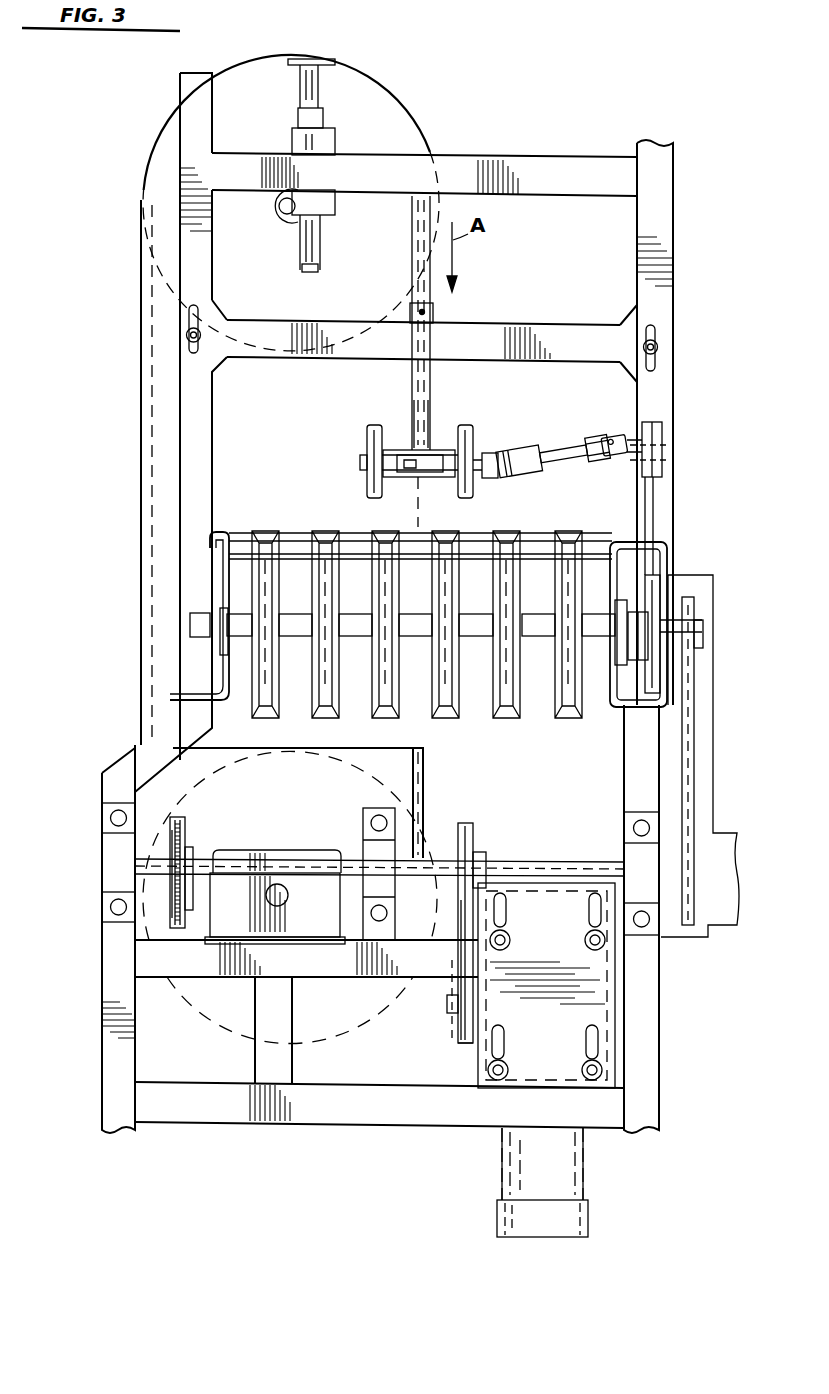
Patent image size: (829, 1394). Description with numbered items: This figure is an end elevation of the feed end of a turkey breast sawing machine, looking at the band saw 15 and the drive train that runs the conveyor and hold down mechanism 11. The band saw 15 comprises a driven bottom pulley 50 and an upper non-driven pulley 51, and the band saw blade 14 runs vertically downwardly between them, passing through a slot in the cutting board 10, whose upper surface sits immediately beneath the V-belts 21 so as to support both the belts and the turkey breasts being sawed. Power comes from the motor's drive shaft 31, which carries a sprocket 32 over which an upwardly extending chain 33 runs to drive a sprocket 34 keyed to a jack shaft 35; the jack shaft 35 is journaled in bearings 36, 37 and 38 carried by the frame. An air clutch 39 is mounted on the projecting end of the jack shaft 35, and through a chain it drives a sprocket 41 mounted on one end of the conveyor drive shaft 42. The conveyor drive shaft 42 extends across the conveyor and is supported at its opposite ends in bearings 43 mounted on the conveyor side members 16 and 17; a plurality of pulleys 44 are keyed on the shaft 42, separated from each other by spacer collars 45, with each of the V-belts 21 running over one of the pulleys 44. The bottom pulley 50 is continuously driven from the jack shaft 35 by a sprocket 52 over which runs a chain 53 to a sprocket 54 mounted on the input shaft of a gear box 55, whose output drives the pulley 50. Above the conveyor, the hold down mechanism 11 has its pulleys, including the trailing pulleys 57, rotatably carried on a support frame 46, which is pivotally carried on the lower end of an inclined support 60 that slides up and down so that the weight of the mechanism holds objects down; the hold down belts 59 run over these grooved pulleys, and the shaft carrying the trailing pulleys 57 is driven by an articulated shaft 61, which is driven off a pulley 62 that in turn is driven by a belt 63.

The cutting board 10 is at (238, 532).
The hold down mechanism 11 is at (333, 436).
The band saw blade 14 is at (436, 392).
The band saw 15 is at (445, 133).
The side member 16 is at (218, 530).
The side member 17 is at (656, 548).
The V-belts 21 is at (513, 530).
The drive shaft 31 is at (450, 1003).
The sprocket 32 is at (456, 1040).
The chain 33 is at (462, 940).
The sprocket 34 is at (475, 848).
The jack shaft 35 is at (510, 861).
The bearing 36 is at (113, 838).
The bearing 37 is at (630, 862).
The bearing 38 is at (368, 855).
The air clutch 39 is at (720, 928).
The sprocket 41 is at (698, 600).
The conveyor drive shaft 42 is at (710, 632).
The bearings 43 is at (222, 610).
The pulleys 44 is at (312, 530).
The spacer collars 45 is at (540, 616).
The support frame 46 is at (440, 450).
The bottom pulley 50 is at (197, 1018).
The upper pulley 51 is at (395, 84).
The sprocket 52 is at (192, 838).
The chain 53 is at (176, 875).
The sprocket 54 is at (191, 915).
The gear box 55 is at (322, 918).
The trailing pulleys 57 is at (482, 458).
The hold down belts 59 is at (377, 420).
The inclined support 60 is at (408, 408).
The articulated shaft 61 is at (565, 446).
The pulley 62 is at (662, 432).
The belt 63 is at (656, 492).